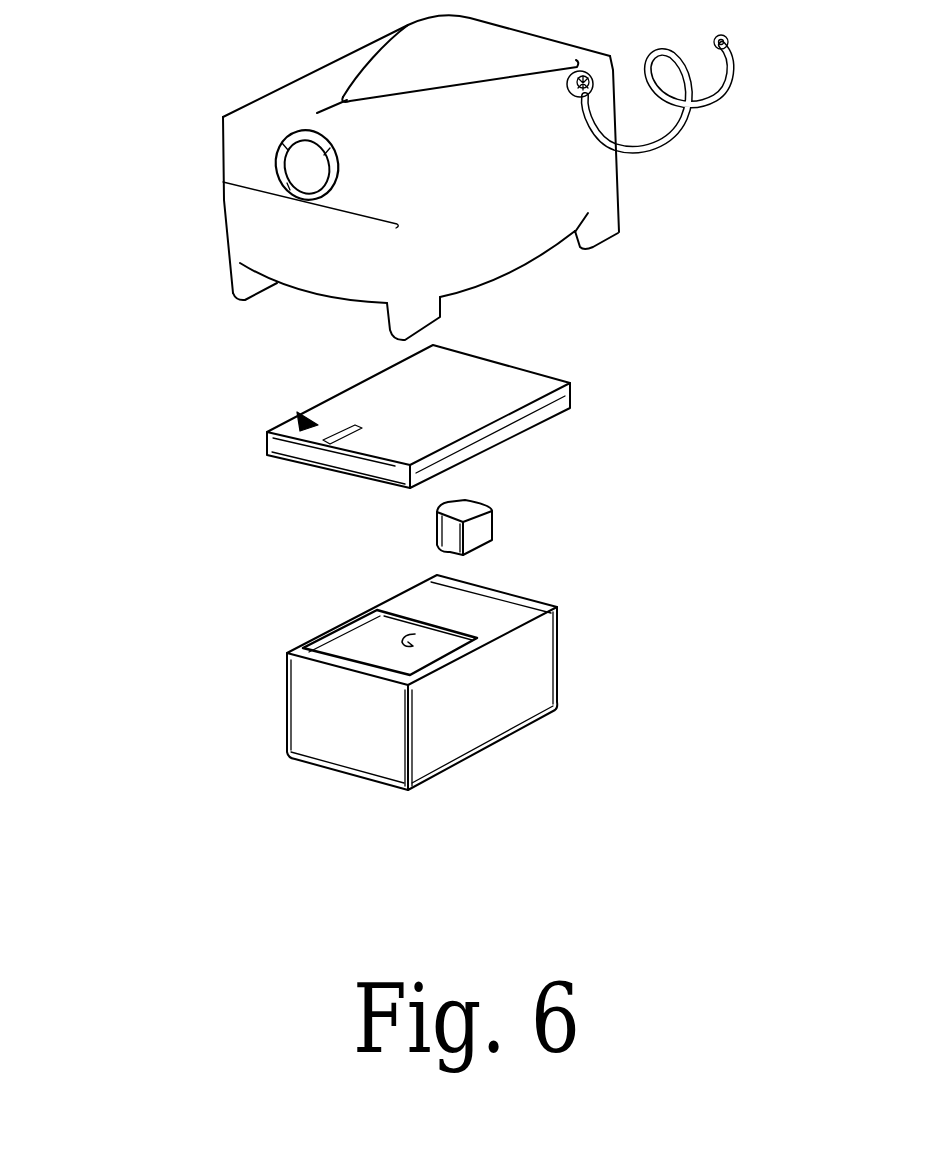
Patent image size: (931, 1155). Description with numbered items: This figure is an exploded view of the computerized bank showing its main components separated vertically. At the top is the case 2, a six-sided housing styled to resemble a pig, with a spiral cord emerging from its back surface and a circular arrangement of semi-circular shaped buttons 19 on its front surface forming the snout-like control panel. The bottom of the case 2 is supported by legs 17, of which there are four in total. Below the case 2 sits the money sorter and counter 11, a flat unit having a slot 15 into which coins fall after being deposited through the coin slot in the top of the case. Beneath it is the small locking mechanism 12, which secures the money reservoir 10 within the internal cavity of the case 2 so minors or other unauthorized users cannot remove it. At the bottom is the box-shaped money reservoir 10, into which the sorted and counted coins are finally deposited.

The case 2 is at (222, 118).
The money reservoir 10 is at (478, 690).
The money sorter and counter 11 is at (455, 373).
The locking mechanism 12 is at (480, 525).
The slot 15 is at (300, 421).
The legs 17 is at (393, 332).
The semi-circular shaped buttons 19 is at (273, 163).